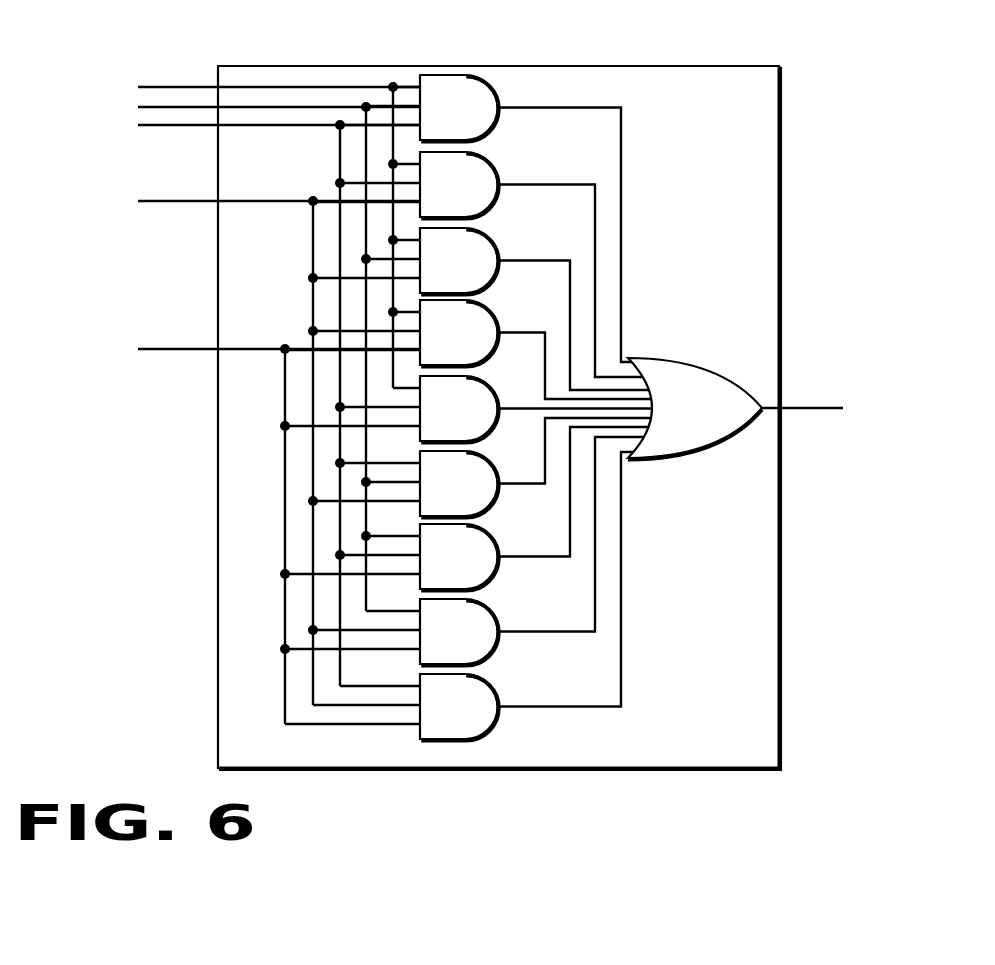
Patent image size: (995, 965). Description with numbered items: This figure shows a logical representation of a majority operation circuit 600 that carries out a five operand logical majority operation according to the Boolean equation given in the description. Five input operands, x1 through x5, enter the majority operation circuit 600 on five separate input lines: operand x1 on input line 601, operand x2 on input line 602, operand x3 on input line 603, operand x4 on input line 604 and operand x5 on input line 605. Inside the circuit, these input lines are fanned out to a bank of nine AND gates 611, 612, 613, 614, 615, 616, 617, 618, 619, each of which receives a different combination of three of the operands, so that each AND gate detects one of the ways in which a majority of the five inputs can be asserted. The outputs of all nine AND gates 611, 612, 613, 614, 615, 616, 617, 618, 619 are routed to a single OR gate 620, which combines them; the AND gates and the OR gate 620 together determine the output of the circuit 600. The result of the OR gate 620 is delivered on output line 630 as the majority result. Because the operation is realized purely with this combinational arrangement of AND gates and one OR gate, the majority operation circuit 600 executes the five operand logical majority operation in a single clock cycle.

The majority operation circuit 600 is at (847, 87).
The input line 601 is at (188, 85).
The input line 602 is at (205, 106).
The input line 603 is at (182, 126).
The input line 604 is at (173, 199).
The input line 605 is at (190, 346).
The AND gate 611 is at (464, 136).
The AND gate 612 is at (464, 213).
The AND gate 613 is at (464, 289).
The AND gate 614 is at (464, 361).
The AND gate 615 is at (464, 437).
The AND gate 616 is at (464, 512).
The AND gate 617 is at (464, 585).
The AND gate 618 is at (464, 660).
The AND gate 619 is at (464, 735).
The OR gate 620 is at (686, 450).
The output line 630 is at (832, 412).